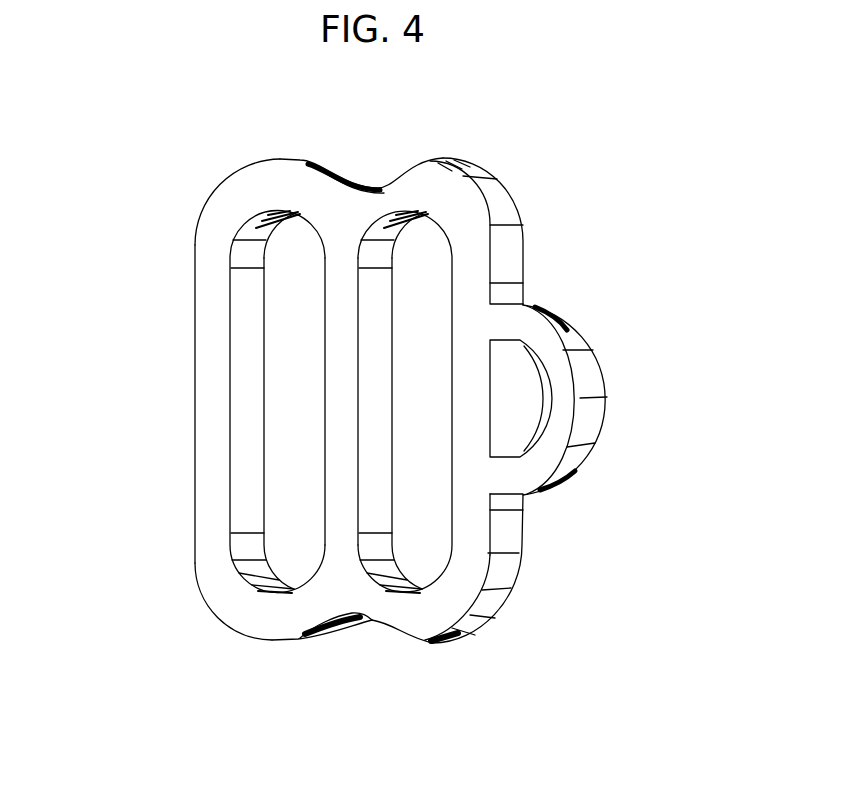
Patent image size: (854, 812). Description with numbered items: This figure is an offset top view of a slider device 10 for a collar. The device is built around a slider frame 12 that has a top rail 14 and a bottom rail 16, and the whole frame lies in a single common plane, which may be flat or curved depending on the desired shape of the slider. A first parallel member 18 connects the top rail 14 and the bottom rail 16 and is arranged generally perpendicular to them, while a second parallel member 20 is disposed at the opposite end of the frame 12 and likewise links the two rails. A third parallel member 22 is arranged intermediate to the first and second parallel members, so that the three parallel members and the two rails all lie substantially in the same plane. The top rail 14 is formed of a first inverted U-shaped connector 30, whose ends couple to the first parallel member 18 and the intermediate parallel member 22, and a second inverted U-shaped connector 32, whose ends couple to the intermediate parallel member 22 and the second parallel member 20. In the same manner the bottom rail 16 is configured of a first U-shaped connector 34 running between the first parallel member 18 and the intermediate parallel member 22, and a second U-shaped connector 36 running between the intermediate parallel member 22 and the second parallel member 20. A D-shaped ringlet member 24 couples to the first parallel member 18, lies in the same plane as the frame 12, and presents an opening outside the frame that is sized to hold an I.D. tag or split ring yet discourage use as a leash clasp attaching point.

The slider device 10 is at (626, 121).
The slider frame 12 is at (513, 217).
The top rail 14 is at (340, 165).
The bottom rail 16 is at (333, 633).
The first parallel member 18 is at (472, 525).
The second parallel member 20 is at (210, 425).
The third parallel member 22 is at (337, 414).
The ringlet member 24 is at (590, 370).
The first inverted U-shaped connector 30 is at (437, 192).
The second inverted U-shaped connector 32 is at (260, 189).
The first U-shaped connector 34 is at (427, 613).
The second U-shaped connector 36 is at (265, 616).